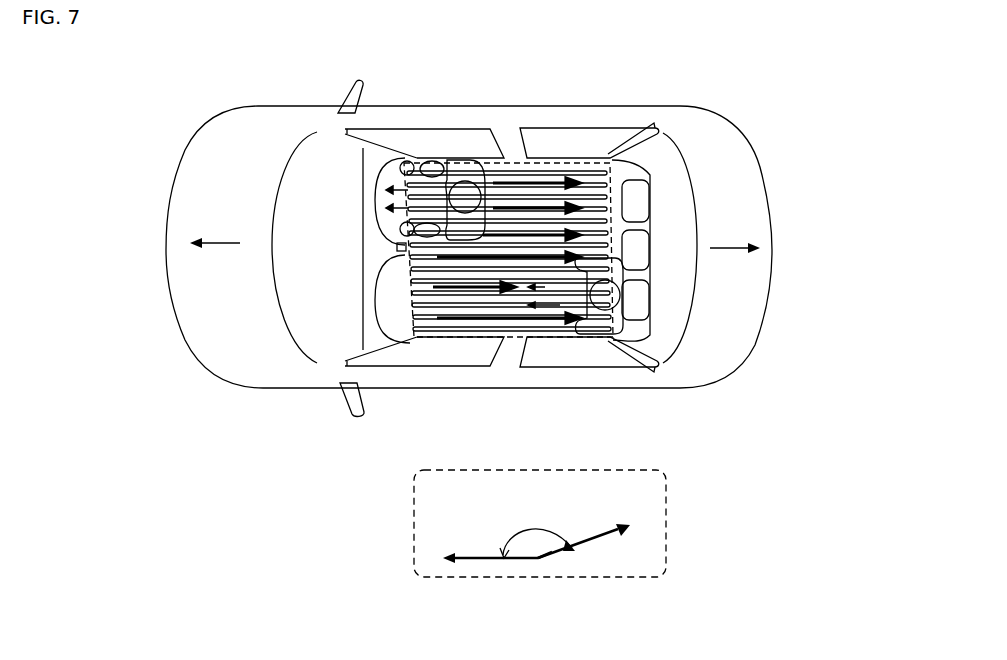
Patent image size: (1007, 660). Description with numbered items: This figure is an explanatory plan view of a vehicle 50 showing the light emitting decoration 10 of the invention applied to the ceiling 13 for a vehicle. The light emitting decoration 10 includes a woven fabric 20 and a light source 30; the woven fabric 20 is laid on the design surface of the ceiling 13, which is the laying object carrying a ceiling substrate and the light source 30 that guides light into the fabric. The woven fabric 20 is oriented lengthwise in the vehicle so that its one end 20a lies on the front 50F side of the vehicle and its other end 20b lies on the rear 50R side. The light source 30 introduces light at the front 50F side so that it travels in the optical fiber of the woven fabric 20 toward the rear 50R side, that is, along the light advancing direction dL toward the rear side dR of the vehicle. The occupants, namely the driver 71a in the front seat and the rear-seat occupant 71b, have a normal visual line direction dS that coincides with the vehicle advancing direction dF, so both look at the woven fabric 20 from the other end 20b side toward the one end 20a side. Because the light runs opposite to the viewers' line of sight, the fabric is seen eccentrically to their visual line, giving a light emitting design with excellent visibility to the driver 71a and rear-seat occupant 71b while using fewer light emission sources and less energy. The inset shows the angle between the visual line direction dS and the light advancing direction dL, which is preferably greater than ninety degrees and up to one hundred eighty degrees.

The light emitting decoration 10 is at (499, 292).
The ceiling for a vehicle 13 is at (413, 340).
The woven fabric 20 is at (600, 197).
The one end of the woven fabric 20a is at (408, 280).
The other end of the woven fabric 20b is at (600, 264).
The light source 30 is at (397, 247).
The vehicle 50 is at (228, 138).
The front side of the vehicle 50F is at (161, 235).
The rear side of the vehicle 50R is at (772, 222).
The driver 71a is at (455, 167).
The rear-seat occupant 71b is at (598, 313).
The vehicle advancing direction dF is at (218, 243).
The rear side direction of the vehicle dR is at (727, 242).
The normal visual line direction dS is at (437, 163).
The light advancing direction dL is at (537, 181).